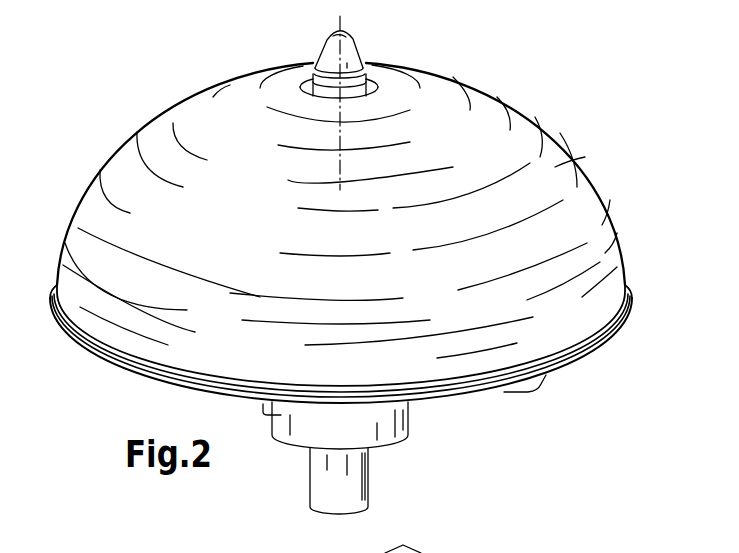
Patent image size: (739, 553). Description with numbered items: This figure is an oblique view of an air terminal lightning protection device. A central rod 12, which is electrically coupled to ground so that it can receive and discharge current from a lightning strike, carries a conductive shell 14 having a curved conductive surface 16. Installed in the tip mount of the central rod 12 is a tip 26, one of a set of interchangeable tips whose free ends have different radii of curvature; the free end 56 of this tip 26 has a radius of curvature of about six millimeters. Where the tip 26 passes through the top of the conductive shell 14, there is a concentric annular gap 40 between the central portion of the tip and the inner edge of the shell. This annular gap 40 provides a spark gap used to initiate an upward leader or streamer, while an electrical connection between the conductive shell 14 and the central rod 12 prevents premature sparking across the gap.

The central rod 12 is at (328, 477).
The conductive shell 14 is at (527, 110).
The curved conductive surface 16 is at (560, 166).
The tip 26 is at (300, 47).
The annular gap 40 is at (373, 86).
The free end 56 is at (335, 32).